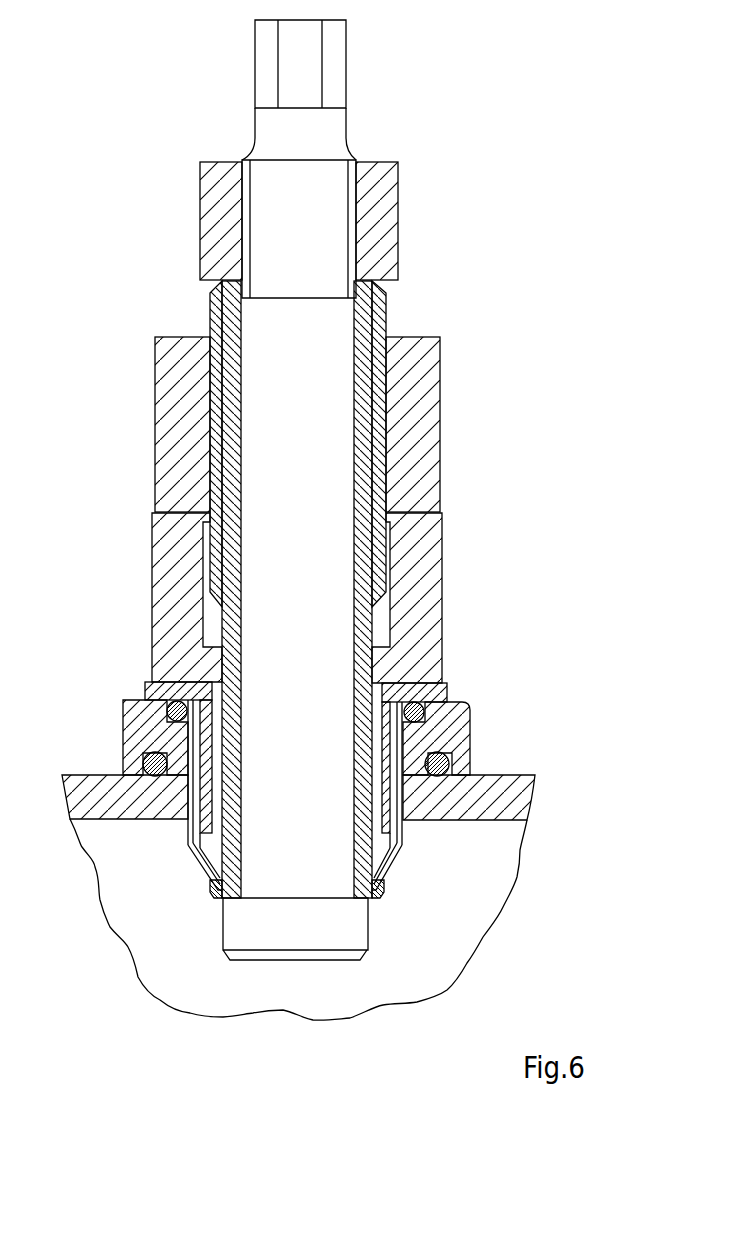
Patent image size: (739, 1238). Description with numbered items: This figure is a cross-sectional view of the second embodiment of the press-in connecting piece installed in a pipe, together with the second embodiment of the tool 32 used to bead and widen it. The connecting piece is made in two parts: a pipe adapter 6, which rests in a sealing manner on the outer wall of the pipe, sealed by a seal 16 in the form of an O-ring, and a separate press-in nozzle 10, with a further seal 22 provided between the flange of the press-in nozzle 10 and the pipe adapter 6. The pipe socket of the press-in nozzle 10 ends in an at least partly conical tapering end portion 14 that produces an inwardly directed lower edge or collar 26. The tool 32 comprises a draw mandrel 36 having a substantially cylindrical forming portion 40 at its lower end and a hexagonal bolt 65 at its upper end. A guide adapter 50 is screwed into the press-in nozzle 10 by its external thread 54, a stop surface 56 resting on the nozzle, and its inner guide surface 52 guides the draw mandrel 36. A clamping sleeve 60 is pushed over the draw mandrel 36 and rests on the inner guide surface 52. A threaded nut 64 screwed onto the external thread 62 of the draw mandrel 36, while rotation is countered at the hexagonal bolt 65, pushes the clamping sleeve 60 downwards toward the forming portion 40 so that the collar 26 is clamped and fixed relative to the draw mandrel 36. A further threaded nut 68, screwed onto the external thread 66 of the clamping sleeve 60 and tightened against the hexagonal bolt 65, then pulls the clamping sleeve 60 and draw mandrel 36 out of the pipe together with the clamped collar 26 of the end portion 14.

The pipe adapter 6 is at (457, 717).
The press-in nozzle 10 is at (418, 838).
The tapering end portion 14 is at (408, 884).
The seal 16 is at (447, 760).
The further seal 22 is at (420, 693).
The lower edge or collar 26 is at (369, 898).
The tool 32 is at (267, 985).
The draw mandrel 36 is at (322, 882).
The forming portion 40 is at (238, 928).
The guide adapter 50 is at (430, 578).
The inner guide surface 52 is at (210, 663).
The external thread 54 is at (205, 743).
The stop surface 56 is at (165, 690).
The clamping sleeve 60 is at (367, 313).
The external thread 62 is at (350, 237).
The threaded nut 64 is at (388, 205).
The hexagonal bolt 65 is at (333, 62).
The external thread 66 is at (378, 393).
The threaded nut 68 is at (430, 443).